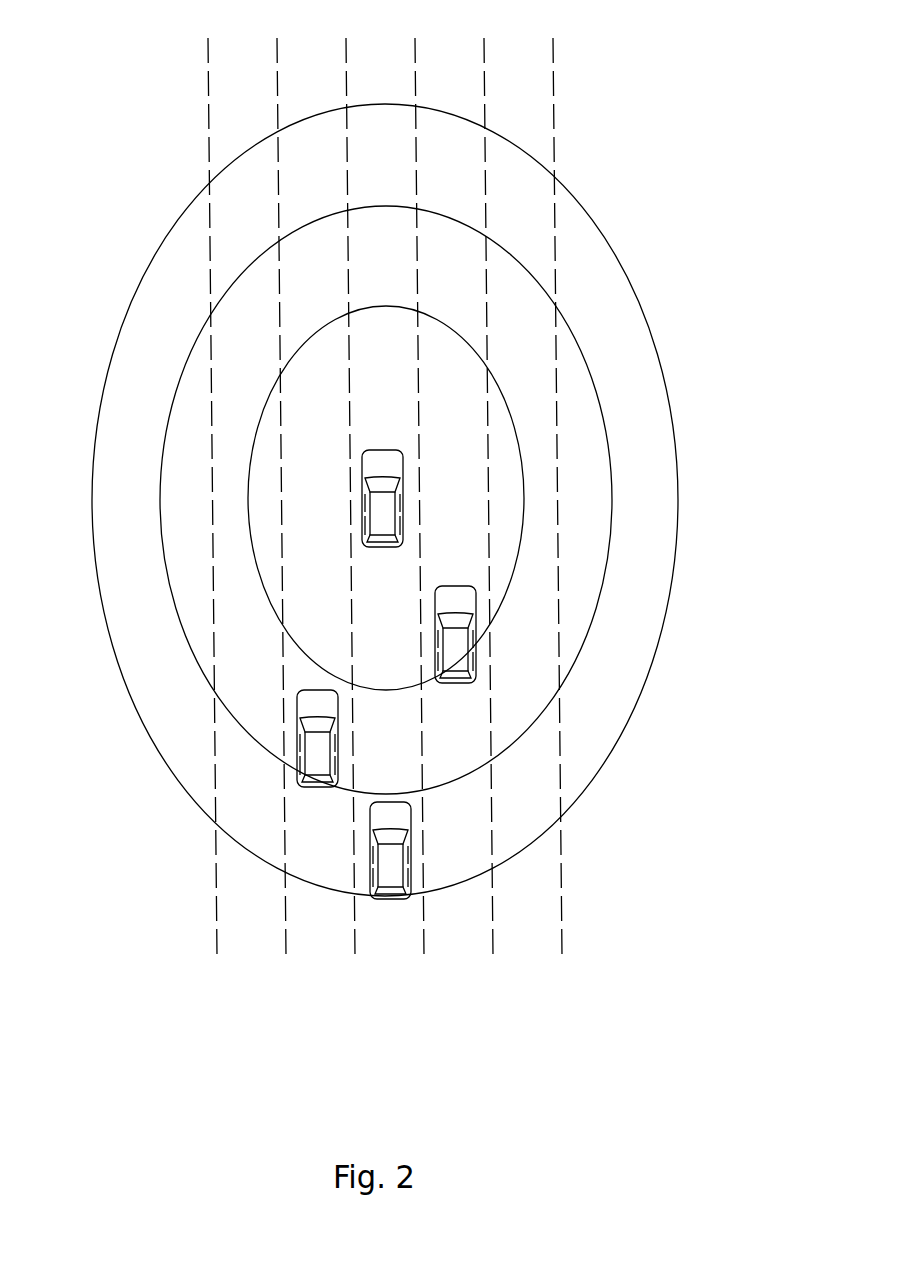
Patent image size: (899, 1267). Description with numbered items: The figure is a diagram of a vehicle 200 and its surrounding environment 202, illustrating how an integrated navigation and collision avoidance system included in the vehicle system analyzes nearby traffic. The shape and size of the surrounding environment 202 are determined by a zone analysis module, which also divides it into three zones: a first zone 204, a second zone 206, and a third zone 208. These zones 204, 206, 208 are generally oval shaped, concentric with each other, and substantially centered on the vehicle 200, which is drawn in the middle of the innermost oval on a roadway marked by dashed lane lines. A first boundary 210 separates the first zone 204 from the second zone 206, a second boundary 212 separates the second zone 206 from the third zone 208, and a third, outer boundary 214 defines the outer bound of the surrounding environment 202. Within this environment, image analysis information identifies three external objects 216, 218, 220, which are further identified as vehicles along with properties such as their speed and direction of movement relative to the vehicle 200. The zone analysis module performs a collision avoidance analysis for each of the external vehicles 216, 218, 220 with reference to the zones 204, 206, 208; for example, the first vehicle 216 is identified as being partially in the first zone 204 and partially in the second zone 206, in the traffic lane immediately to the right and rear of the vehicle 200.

The vehicle 200 is at (385, 512).
The surrounding environment 202 is at (102, 72).
The first zone 204 is at (455, 460).
The second zone 206 is at (520, 310).
The third zone 208 is at (515, 198).
The first boundary 210 is at (527, 481).
The second boundary 212 is at (479, 500).
The outer boundary 214 is at (420, 500).
The first vehicle 216 is at (455, 648).
The external vehicle 218 is at (318, 750).
The external vehicle 220 is at (388, 870).